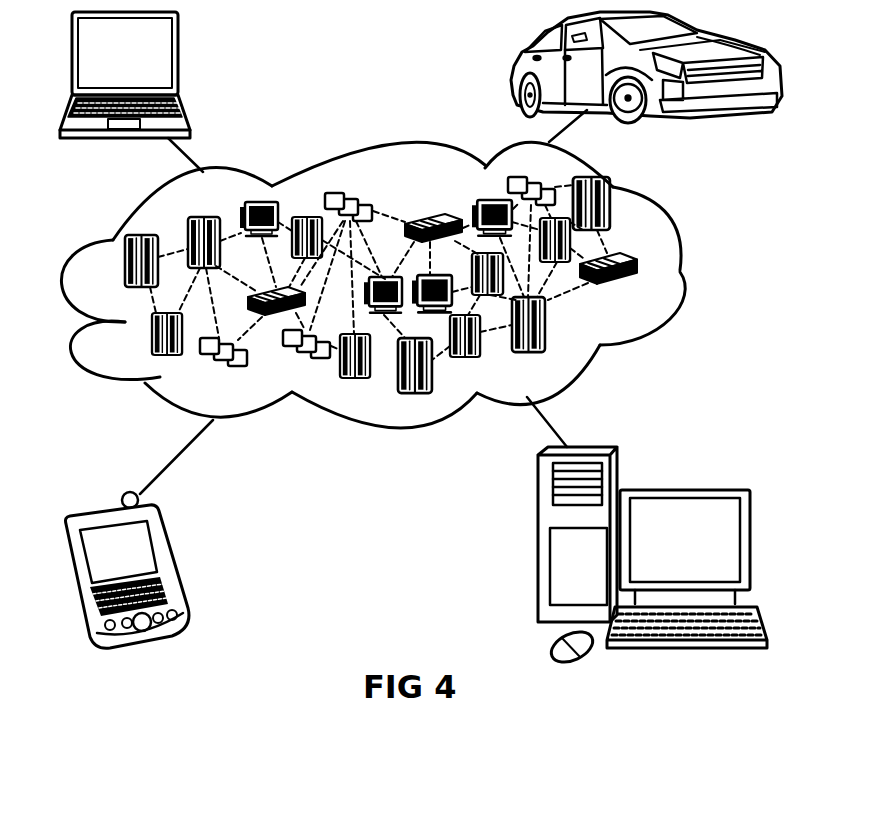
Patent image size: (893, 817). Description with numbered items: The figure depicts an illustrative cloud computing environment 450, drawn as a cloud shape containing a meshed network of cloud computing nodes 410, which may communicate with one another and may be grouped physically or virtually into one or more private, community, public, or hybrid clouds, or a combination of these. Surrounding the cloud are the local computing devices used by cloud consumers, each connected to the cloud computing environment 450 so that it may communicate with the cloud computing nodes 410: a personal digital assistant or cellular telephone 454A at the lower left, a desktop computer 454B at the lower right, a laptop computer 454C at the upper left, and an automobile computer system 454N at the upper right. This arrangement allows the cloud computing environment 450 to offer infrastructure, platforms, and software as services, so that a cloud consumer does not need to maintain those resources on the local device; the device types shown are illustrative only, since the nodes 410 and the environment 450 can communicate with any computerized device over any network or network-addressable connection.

The cloud computing nodes 410 is at (638, 291).
The cloud computing environment 450 is at (682, 268).
The personal digital assistant (PDA) or cellular telephone 454A is at (173, 560).
The desktop computer 454B is at (683, 491).
The laptop computer 454C is at (179, 60).
The automobile computer system 454N is at (514, 72).